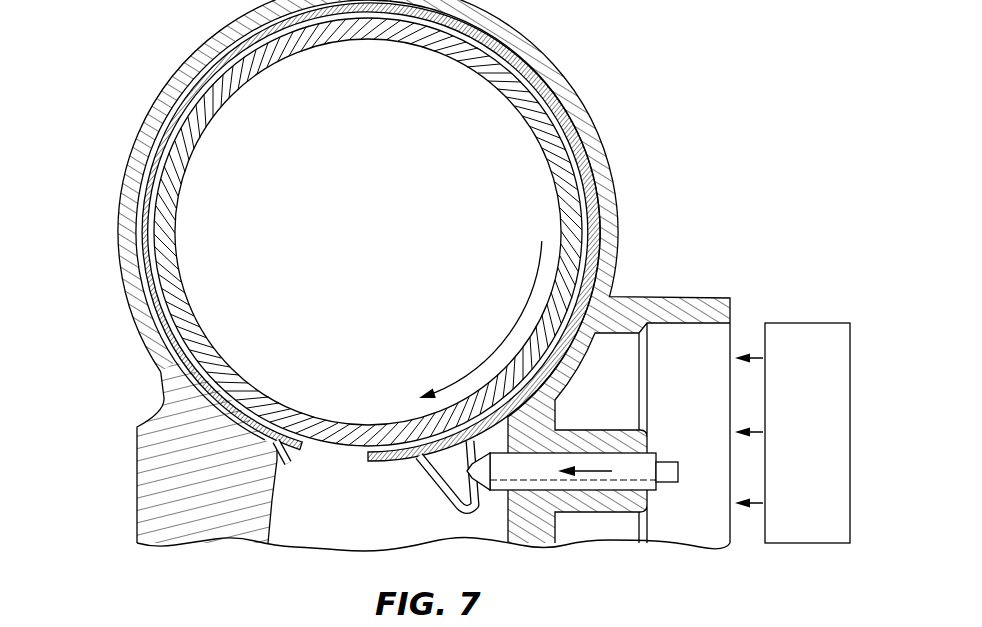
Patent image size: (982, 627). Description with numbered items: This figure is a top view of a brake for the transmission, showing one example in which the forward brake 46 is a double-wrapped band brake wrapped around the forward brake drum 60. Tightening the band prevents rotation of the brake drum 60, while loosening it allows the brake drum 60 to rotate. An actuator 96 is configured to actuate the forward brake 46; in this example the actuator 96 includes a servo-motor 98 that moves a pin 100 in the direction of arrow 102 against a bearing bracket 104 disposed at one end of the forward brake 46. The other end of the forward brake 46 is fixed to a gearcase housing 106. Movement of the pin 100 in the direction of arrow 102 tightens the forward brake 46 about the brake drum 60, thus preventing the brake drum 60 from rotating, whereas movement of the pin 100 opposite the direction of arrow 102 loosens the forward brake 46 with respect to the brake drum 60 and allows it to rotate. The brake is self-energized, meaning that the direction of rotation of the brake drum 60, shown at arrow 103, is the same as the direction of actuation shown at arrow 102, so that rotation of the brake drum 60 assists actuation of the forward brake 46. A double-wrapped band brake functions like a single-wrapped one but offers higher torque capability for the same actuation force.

The forward brake 46 is at (598, 142).
The forward brake drum 60 is at (518, 90).
The actuator 96 is at (796, 288).
The servo-motor 98 is at (821, 423).
The pin 100 is at (542, 472).
The arrow 102 is at (597, 471).
The arrow 103 is at (497, 345).
The bearing bracket 104 is at (471, 514).
The gearcase housing 106 is at (272, 449).